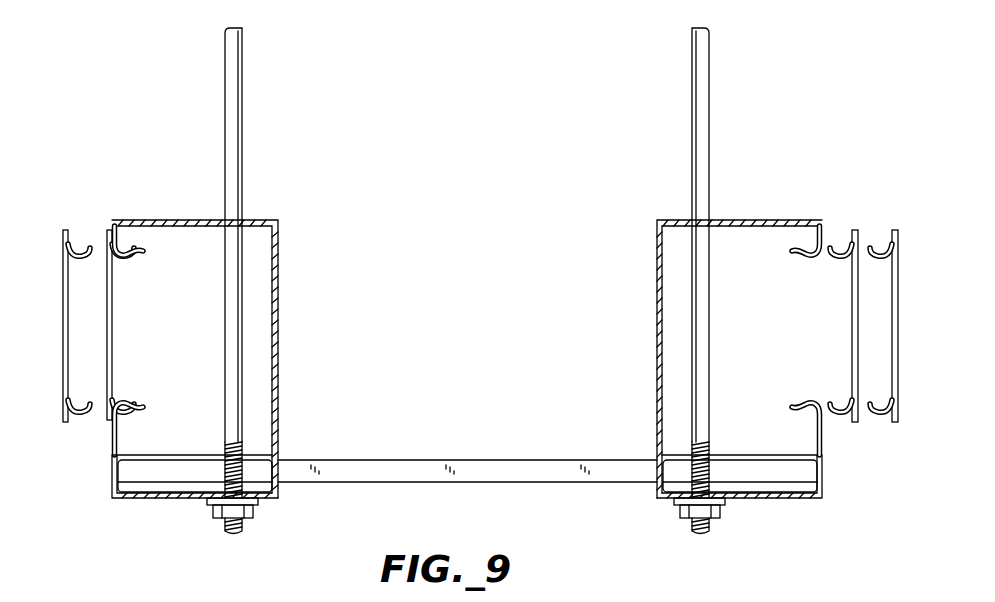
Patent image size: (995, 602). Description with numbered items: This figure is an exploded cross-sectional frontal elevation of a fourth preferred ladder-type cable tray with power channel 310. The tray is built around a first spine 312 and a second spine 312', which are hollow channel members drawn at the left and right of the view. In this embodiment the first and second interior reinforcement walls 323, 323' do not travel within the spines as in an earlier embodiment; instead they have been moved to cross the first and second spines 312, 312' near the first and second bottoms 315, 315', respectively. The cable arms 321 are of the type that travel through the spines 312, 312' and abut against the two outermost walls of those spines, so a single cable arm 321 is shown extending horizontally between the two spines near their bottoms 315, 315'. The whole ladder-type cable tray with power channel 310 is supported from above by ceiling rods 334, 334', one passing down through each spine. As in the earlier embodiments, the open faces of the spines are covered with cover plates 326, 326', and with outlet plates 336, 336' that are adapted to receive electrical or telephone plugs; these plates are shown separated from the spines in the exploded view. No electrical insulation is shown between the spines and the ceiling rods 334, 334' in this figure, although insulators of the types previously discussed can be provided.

The ladder-type cable tray with power channel 310 is at (505, 62).
The first spine 312 is at (739, 360).
The second spine 312' is at (195, 354).
The first bottom 315 is at (739, 505).
The second bottom 315' is at (195, 505).
The cable arms 321 is at (303, 460).
The first interior reinforcement wall 323 is at (738, 451).
The second interior reinforcement wall 323' is at (195, 451).
The cover plate 326 is at (811, 326).
The cover plate 326' is at (156, 325).
The ceiling rod 334 is at (700, 281).
The ceiling rod 334' is at (193, 281).
The outlet plate 336 is at (861, 306).
The outlet plate 336' is at (78, 306).